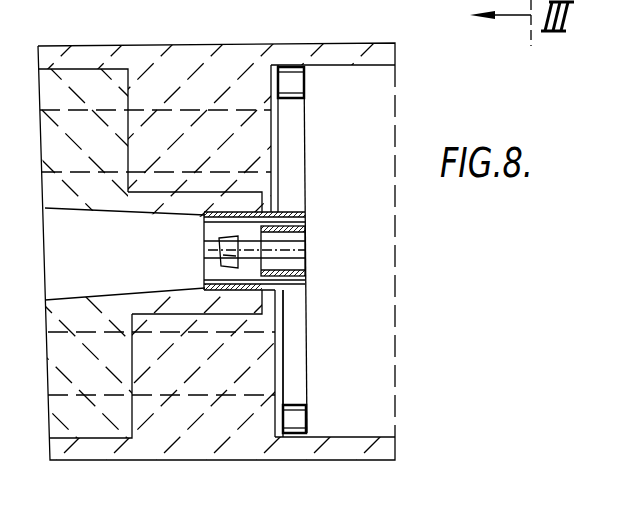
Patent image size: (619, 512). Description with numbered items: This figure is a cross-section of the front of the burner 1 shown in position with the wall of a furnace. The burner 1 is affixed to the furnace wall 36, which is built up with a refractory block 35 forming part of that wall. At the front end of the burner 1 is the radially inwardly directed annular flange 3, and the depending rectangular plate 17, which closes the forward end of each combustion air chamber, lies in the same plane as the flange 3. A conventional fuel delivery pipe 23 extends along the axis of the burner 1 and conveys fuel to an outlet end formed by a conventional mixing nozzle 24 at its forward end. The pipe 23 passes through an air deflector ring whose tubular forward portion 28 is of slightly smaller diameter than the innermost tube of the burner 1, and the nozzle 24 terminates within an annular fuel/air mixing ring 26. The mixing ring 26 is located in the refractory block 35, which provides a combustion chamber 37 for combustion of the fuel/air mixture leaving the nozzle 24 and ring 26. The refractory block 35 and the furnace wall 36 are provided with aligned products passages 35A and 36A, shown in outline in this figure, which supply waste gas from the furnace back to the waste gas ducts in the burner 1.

The burner 1 is at (290, 56).
The annular flange 3 is at (290, 82).
The depending rectangular plate 17 is at (285, 146).
The fuel delivery pipe 23 is at (288, 249).
The mixing nozzle 24 is at (219, 240).
The fuel/air mixing ring 26 is at (218, 266).
The forward portion 28 is at (287, 224).
The refractory block 35 is at (122, 104).
The products passage 35A is at (78, 122).
The furnace wall 36 is at (197, 423).
The products passage 36A is at (212, 127).
The combustion chamber 37 is at (100, 274).